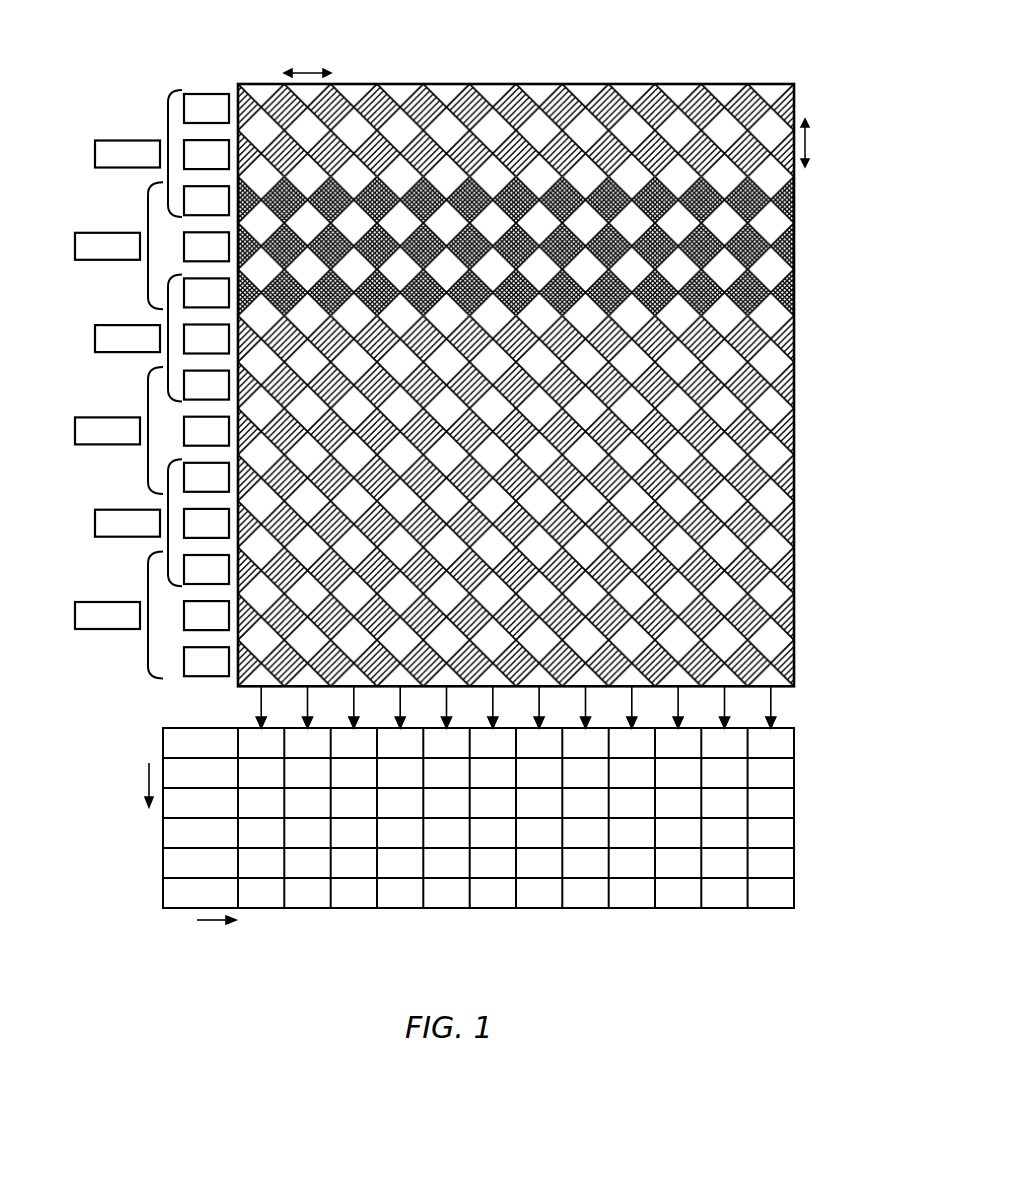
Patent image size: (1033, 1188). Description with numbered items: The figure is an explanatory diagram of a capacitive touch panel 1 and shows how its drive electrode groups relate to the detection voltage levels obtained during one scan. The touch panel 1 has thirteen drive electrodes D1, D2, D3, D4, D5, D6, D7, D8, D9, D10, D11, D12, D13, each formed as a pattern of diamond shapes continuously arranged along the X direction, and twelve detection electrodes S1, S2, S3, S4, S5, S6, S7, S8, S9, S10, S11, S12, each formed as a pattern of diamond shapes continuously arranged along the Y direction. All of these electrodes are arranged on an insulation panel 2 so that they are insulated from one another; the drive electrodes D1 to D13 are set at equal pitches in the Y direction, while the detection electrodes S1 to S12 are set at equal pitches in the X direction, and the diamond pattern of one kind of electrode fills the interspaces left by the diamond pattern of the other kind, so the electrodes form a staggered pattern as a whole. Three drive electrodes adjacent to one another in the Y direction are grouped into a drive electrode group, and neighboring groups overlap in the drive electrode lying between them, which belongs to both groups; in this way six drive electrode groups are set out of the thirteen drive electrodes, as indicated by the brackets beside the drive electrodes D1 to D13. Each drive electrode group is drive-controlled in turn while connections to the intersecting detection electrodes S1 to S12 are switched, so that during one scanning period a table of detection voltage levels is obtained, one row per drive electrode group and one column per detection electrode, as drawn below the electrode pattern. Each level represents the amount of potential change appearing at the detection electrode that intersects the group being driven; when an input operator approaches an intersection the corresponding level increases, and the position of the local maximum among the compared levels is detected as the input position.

The capacitive touch panel 1 is at (458, 56).
The insulation panel 2 is at (595, 85).
The X direction X is at (307, 64).
The Y direction Y is at (813, 143).
The drive electrode D1 is at (206, 108).
The drive electrode D2 is at (206, 154).
The drive electrode D3 is at (206, 200).
The drive electrode D4 is at (206, 246).
The drive electrode D5 is at (206, 292).
The drive electrode D6 is at (206, 339).
The drive electrode D7 is at (206, 385).
The drive electrode D8 is at (206, 431).
The drive electrode D9 is at (206, 477).
The drive electrode D10 is at (206, 523).
The drive electrode D11 is at (206, 569).
The drive electrode D12 is at (206, 615).
The drive electrode D13 is at (206, 661).
The detection electrode S1 is at (252, 707).
The detection electrode S2 is at (298, 707).
The detection electrode S3 is at (344, 707).
The detection electrode S4 is at (391, 707).
The detection electrode S5 is at (437, 707).
The detection electrode S6 is at (483, 707).
The detection electrode S7 is at (530, 707).
The detection electrode S8 is at (576, 707).
The detection electrode S9 is at (622, 707).
The detection electrode S10 is at (665, 707).
The detection electrode S11 is at (711, 707).
The detection electrode S12 is at (757, 707).